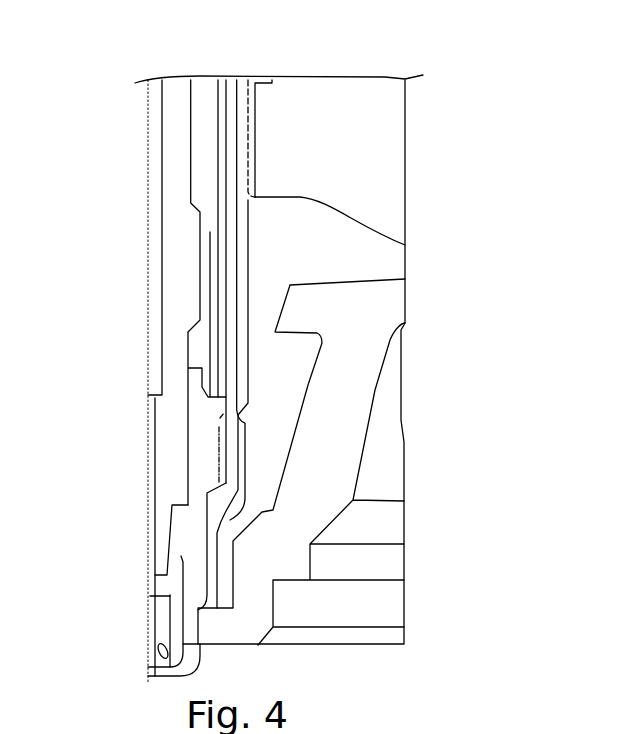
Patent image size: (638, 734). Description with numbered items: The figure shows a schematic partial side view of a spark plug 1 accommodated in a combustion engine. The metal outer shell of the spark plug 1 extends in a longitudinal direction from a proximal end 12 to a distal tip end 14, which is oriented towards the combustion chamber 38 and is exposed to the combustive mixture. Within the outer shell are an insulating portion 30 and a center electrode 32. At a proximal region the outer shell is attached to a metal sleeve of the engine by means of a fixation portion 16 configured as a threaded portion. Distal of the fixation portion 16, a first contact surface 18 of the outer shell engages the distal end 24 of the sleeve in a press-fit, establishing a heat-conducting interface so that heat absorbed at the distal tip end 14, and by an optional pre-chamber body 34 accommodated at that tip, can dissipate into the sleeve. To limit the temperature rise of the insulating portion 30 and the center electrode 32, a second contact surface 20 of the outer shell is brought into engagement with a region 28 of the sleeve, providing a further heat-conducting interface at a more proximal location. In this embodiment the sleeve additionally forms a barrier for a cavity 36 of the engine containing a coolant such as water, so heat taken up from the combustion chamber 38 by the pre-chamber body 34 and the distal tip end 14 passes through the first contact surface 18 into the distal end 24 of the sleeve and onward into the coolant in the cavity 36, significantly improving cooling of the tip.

The spark plug 1 is at (120, 86).
The cavity 36 is at (255, 232).
The proximal end 12 is at (185, 358).
The insulating portion 30 is at (160, 380).
The center electrode 32 is at (138, 462).
The fixation portion 16 is at (208, 447).
The second contact surface 20 is at (201, 486).
The region 28 is at (216, 520).
The first contact surface 18 is at (192, 587).
The distal end 24 is at (182, 607).
The distal tip end 14 is at (164, 636).
The pre-chamber body 34 is at (135, 667).
The combustion chamber 38 is at (268, 660).